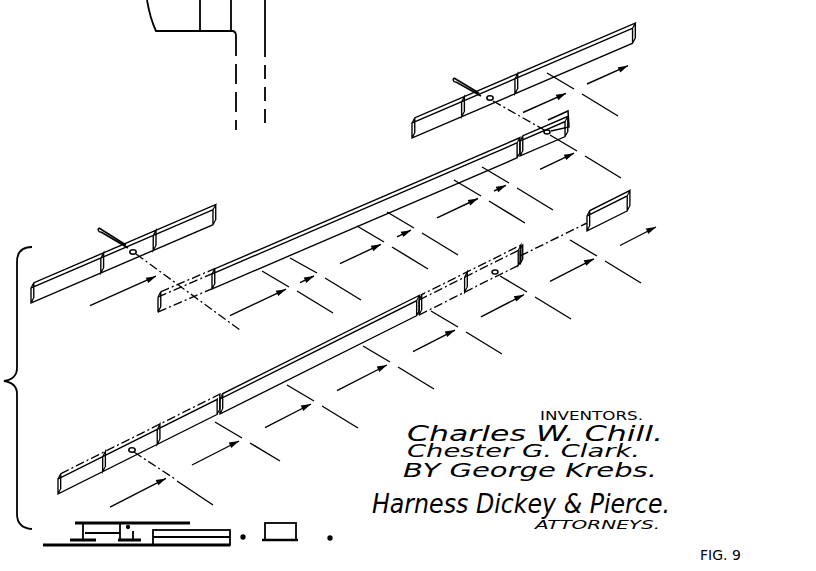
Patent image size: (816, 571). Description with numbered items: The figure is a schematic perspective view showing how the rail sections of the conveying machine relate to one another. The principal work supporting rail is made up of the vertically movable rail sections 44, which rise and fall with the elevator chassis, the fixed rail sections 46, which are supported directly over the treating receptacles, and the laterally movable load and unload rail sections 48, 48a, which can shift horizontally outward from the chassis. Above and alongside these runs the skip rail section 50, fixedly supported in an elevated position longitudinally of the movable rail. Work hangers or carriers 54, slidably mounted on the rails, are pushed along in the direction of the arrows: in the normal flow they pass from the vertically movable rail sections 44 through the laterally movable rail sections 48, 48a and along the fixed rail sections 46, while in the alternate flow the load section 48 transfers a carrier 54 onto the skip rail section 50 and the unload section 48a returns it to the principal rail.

The vertically movable rail section 44 is at (55, 276).
The fixed rail section 46 is at (290, 371).
The laterally movable load rail section 48 is at (127, 245).
The laterally movable unload rail section 48a is at (497, 93).
The skip rail section 50 is at (337, 222).
The work hanger or carrier 54 is at (257, 45).